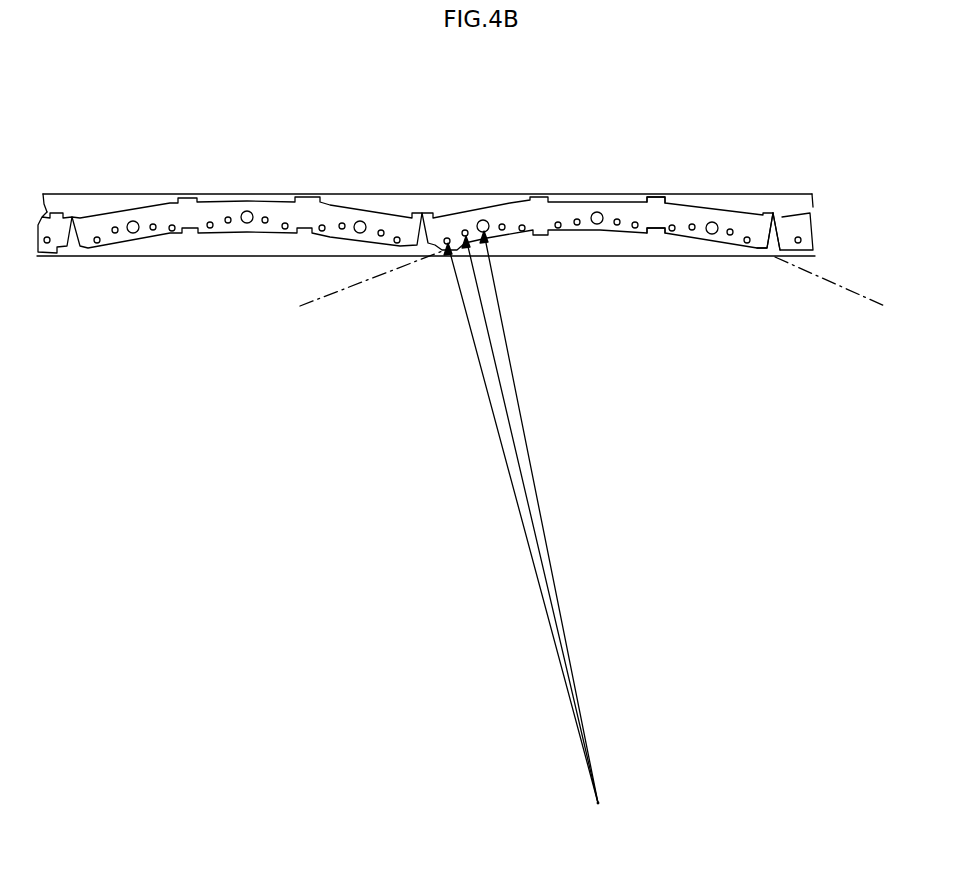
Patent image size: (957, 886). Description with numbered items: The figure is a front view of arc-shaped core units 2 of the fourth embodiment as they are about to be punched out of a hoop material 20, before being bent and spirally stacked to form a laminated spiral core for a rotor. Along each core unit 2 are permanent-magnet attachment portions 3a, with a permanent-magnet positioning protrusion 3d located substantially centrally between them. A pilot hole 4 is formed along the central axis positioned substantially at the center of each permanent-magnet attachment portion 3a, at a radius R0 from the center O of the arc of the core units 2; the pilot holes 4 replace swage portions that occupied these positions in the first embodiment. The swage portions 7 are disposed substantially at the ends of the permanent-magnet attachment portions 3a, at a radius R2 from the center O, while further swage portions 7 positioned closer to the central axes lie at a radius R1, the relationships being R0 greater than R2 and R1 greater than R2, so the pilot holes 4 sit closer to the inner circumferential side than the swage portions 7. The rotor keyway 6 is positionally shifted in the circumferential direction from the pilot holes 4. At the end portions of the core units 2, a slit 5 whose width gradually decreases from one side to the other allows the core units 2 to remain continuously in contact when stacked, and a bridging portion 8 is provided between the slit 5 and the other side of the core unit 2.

The hoop material 20 is at (378, 198).
The core unit 2 is at (513, 200).
The permanent-magnet attachment portion 3a is at (597, 212).
The permanent-magnet positioning protrusion 3d is at (657, 198).
The pilot hole 4 is at (713, 224).
The bridging portion 8 is at (781, 214).
The rotor keyway 6 is at (648, 232).
The swage portion 7 is at (747, 243).
The slit 5 is at (777, 252).
The radius R0 is at (539, 517).
The radius R1 is at (542, 568).
The radius R2 is at (521, 523).
The center of the arc O is at (609, 805).